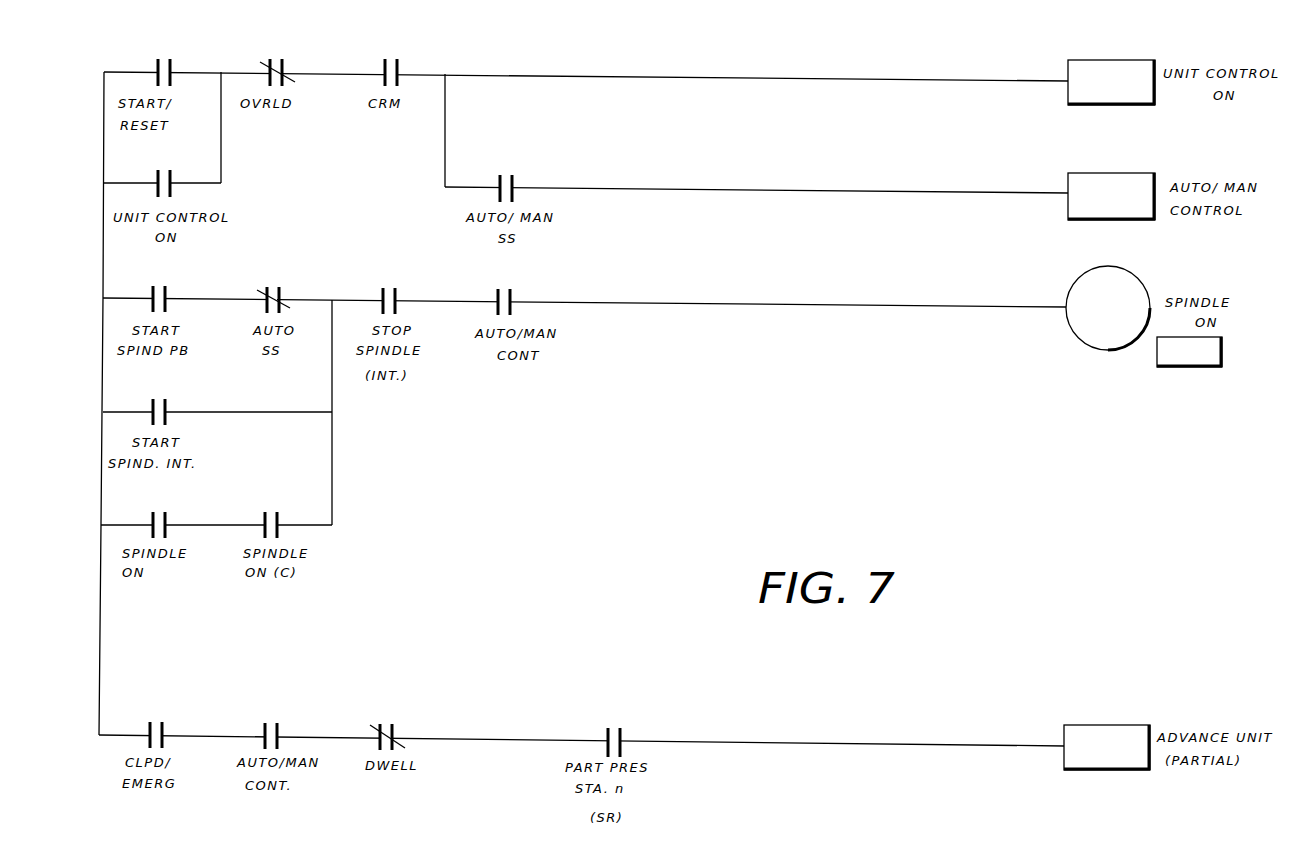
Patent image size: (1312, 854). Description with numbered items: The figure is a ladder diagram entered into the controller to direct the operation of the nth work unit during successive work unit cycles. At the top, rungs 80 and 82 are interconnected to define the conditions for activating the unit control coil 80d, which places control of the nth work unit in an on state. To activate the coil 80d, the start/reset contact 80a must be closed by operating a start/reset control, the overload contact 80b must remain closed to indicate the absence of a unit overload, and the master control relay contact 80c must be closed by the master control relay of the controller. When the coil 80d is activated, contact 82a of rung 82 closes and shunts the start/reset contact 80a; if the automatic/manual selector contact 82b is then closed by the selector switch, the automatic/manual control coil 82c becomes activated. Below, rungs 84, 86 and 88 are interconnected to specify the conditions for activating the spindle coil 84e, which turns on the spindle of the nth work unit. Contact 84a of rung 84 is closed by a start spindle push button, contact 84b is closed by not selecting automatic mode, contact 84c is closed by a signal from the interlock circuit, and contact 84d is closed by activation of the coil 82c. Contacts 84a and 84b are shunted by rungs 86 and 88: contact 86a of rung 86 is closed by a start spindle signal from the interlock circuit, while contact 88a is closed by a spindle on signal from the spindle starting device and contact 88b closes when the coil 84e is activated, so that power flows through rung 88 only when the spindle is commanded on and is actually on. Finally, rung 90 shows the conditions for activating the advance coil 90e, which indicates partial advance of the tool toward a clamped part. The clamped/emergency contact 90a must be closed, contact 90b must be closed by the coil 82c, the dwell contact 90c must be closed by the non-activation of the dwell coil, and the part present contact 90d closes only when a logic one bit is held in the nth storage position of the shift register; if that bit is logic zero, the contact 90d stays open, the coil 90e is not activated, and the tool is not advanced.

The rung 80 is at (502, 73).
The start/reset contact 80a is at (167, 57).
The overload contact 80b is at (275, 56).
The master control relay contact 80c is at (392, 58).
The unit control coil 80d is at (1068, 95).
The rung 82 is at (115, 183).
The contact 82a is at (165, 172).
The automatic/manual selector contact 82b is at (523, 145).
The automatic/manual control coil 82c is at (1090, 173).
The rung 84 is at (760, 302).
The start spindle push button contact 84a is at (168, 290).
The selector switch contact 84b is at (282, 290).
The interlock contact 84c is at (390, 290).
The contact 84d is at (508, 288).
The spindle coil 84e is at (1073, 278).
The rung 86 is at (297, 385).
The start spindle interlock contact 86a is at (168, 378).
The rung 88 is at (206, 523).
The spindle on contact 88a is at (158, 515).
The contact 88b is at (274, 513).
The rung 90 is at (797, 740).
The clamped/emergency contact 90a is at (158, 720).
The contact 90b is at (273, 721).
The dwell contact 90c is at (386, 722).
The part present contact 90d is at (615, 725).
The advance coil 90e is at (1097, 725).